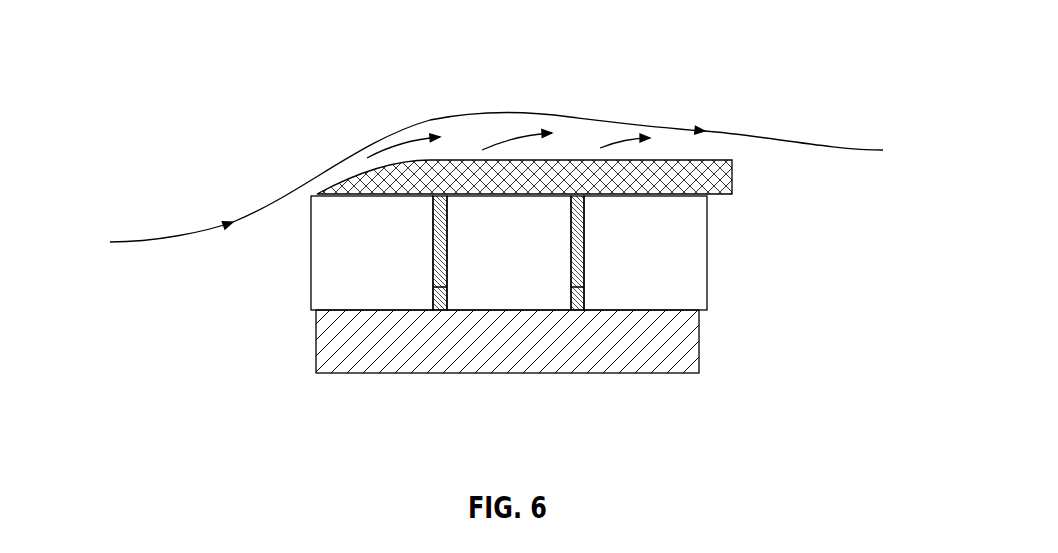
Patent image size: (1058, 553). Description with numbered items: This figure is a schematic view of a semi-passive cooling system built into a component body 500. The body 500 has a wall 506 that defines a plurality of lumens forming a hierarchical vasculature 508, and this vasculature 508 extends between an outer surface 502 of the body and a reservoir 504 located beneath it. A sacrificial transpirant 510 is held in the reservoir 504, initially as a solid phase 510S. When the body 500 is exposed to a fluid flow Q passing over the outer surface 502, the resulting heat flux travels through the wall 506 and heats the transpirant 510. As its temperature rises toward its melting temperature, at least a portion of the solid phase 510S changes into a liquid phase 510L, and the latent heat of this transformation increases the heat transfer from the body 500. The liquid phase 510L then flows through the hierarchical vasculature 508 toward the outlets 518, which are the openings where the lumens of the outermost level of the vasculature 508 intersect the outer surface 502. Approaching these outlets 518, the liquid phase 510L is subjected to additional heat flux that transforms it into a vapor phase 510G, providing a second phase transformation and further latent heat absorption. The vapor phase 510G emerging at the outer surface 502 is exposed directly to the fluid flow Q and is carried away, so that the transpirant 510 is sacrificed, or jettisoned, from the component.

The body 500 is at (748, 233).
The outer surface 502 is at (330, 190).
The reservoir 504 is at (718, 340).
The wall 506 is at (698, 287).
The hierarchical vasculature 508 is at (582, 322).
The transpirant 510 is at (195, 260).
The vapor phase of the transpirant 510G is at (368, 186).
The liquid phase of the transpirant 510L is at (440, 248).
The solid phase of the transpirant 510S is at (330, 340).
The outlets 518 is at (580, 197).
The fluid flow Q is at (170, 237).